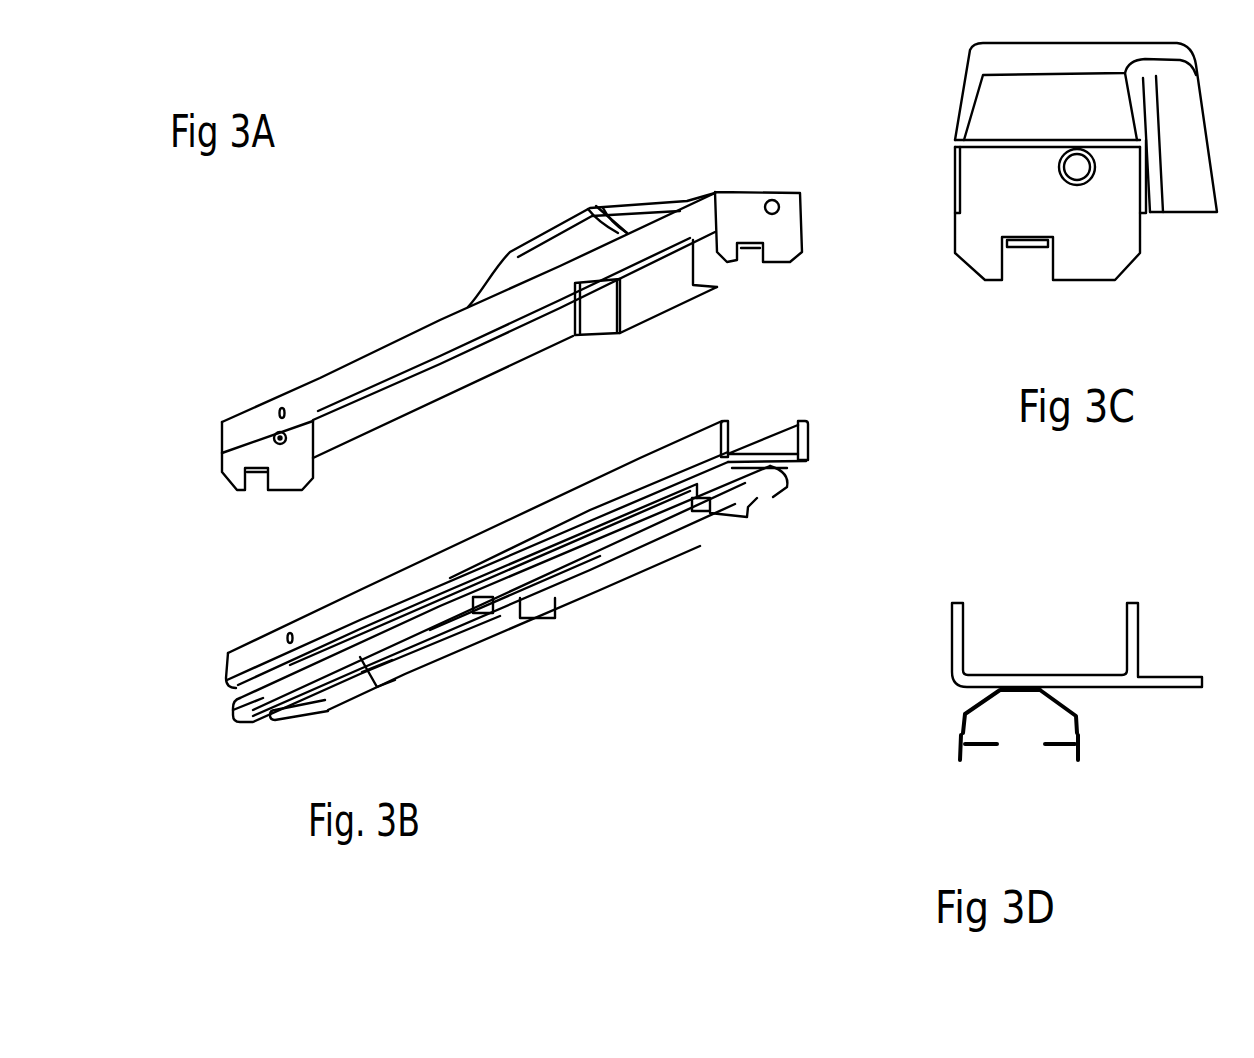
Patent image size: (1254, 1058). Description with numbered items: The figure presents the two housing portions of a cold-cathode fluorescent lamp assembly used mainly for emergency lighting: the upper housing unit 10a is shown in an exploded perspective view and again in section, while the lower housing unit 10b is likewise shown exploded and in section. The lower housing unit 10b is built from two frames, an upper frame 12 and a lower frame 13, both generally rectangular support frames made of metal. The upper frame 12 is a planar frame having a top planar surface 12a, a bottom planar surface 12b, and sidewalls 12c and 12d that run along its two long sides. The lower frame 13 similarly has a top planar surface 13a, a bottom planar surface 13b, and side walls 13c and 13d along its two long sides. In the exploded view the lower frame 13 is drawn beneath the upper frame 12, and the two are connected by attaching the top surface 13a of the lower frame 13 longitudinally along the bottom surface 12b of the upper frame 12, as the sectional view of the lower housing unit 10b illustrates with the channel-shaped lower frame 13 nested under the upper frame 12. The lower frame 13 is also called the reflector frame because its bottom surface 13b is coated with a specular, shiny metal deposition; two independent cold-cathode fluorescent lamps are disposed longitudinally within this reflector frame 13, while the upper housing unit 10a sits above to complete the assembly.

In FIG. 3A, the upper housing unit 10a is at (498, 226).
In FIG. 3C, the upper housing unit 10a is at (1126, 307).
In FIG. 3B, the lower housing unit 10b is at (612, 717).
In FIG. 3D, the lower housing unit 10b is at (1149, 845).
In FIG. 3B, the upper frame 12 is at (242, 640).
In FIG. 3D, the upper frame 12 is at (1138, 627).
In FIG. 3B, the top planar surface 12a is at (747, 455).
In FIG. 3B, the bottom planar surface 12b is at (789, 470).
In FIG. 3B, the sidewall 12c is at (638, 470).
In FIG. 3B, the sidewall 12d is at (810, 438).
In FIG. 3B, the lower frame 13 is at (242, 725).
In FIG. 3D, the lower frame 13 is at (1063, 707).
In FIG. 3B, the top planar surface 13a is at (358, 640).
In FIG. 3B, the bottom planar surface 13b is at (702, 508).
In FIG. 3B, the side wall 13c is at (437, 628).
In FIG. 3B, the side wall 13d is at (630, 567).